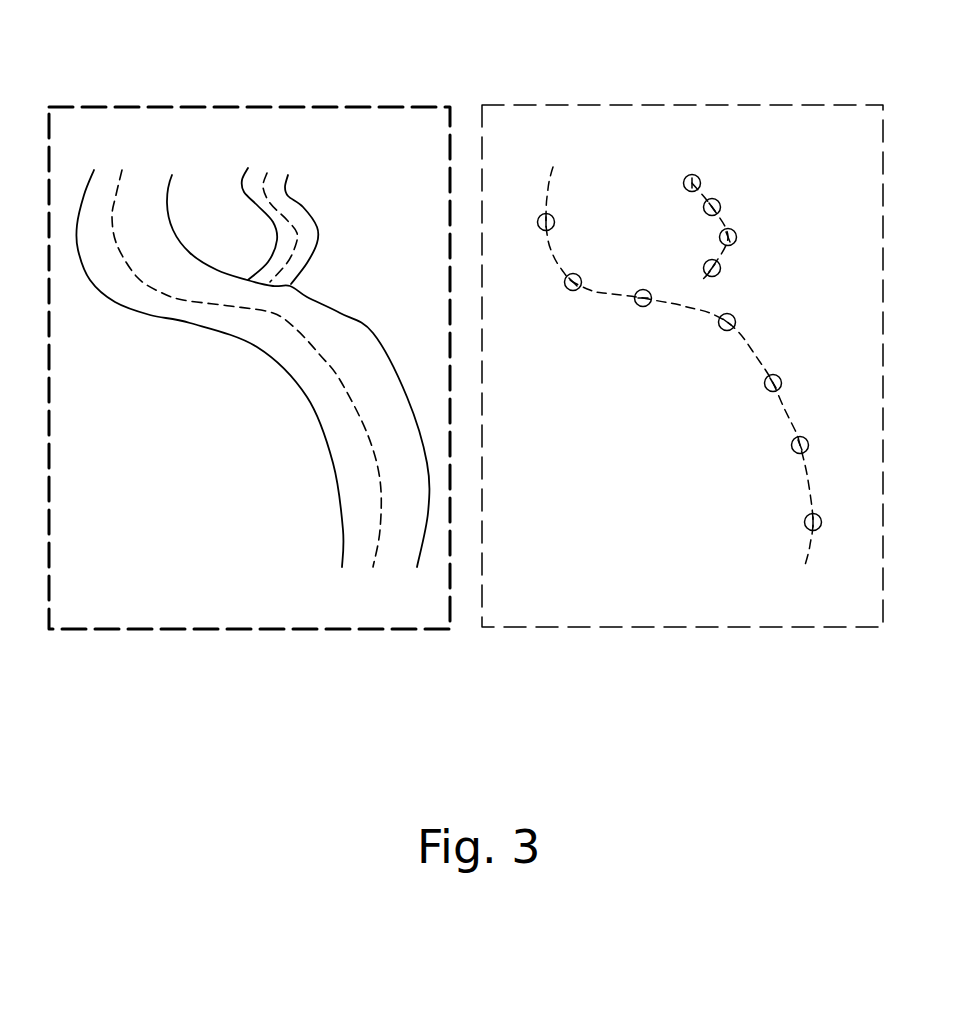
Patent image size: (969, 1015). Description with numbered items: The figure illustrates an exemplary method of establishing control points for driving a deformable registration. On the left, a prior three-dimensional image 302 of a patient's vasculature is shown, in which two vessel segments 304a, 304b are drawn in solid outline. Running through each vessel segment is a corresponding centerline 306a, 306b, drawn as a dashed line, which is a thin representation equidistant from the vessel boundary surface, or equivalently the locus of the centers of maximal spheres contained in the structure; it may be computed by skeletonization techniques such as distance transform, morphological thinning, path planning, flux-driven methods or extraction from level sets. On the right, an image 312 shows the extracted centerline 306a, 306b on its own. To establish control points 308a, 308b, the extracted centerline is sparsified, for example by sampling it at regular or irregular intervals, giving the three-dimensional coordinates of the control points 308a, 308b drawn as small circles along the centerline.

The prior 3D image 302 is at (260, 615).
The 3D vasculature 304a is at (172, 175).
The 3D vasculature 304b is at (286, 195).
The 3D centerline 306a is at (114, 215).
The 3D centerline 306b is at (268, 198).
The control points 308a is at (643, 305).
The control points 308b is at (730, 232).
The image 312 is at (683, 613).